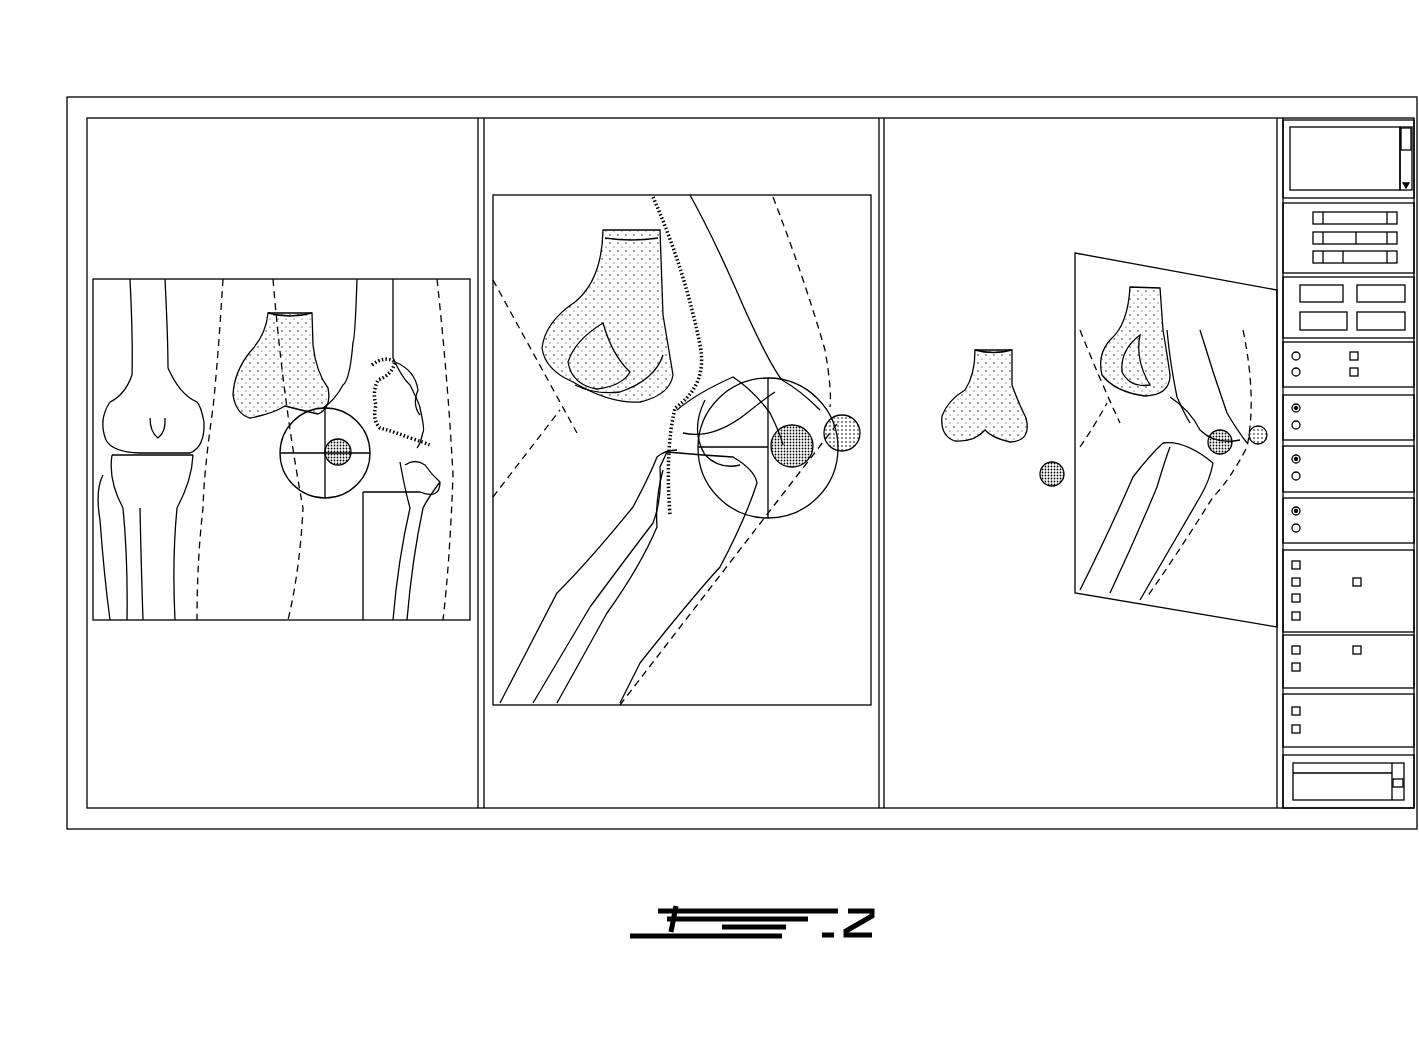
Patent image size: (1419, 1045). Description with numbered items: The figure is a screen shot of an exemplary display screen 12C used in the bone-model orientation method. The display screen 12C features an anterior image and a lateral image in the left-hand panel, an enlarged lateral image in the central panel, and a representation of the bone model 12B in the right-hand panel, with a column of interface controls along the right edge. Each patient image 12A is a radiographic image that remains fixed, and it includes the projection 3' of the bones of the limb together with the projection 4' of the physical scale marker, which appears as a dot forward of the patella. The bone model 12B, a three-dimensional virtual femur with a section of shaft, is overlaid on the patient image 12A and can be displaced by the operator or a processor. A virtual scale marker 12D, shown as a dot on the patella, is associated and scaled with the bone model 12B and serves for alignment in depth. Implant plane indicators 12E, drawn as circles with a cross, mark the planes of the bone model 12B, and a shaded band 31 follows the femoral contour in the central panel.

The patient image 12A is at (346, 145).
The bone model 12B is at (283, 405).
The display screen 12C is at (520, 833).
The scale marker 12D is at (785, 467).
The implant plane indicators 12E is at (358, 487).
The cartilage representation 31 is at (685, 230).
The projection of the bones 3' is at (160, 581).
The projection of the scale marker 4' is at (1042, 244).